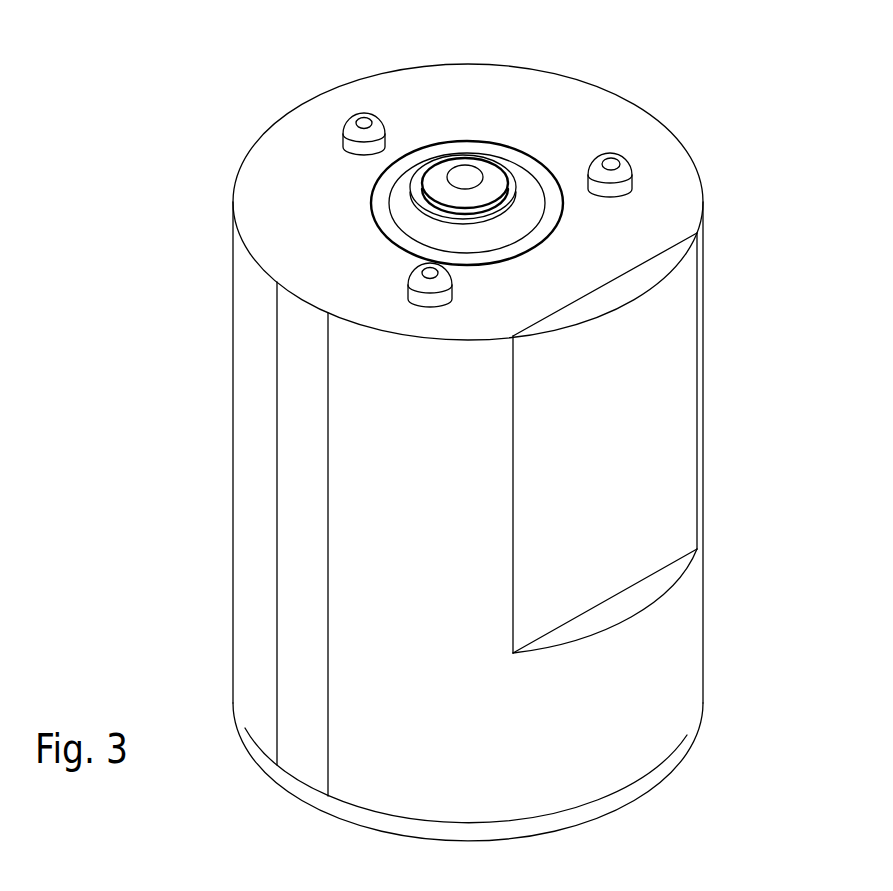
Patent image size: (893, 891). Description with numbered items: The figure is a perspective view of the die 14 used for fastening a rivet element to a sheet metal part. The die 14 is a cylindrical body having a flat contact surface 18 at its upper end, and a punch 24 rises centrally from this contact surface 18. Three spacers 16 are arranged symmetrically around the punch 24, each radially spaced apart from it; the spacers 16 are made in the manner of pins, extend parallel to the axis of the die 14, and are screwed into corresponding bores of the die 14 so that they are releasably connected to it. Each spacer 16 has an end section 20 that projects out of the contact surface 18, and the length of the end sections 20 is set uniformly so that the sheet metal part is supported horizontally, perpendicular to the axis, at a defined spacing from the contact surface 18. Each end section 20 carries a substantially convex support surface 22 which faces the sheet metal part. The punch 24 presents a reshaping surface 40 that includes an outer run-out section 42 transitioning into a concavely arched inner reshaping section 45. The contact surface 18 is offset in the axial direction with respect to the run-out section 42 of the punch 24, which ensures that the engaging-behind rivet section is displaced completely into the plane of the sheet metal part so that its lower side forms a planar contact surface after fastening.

The die 14 is at (668, 672).
The spacer 16 is at (470, 177).
The contact surface 18 is at (515, 100).
The end section 20 is at (378, 128).
The support surface 22 is at (362, 120).
The punch 24 is at (500, 173).
The reshaping surface 40 is at (522, 217).
The run-out section 42 is at (520, 242).
The inner reshaping section 45 is at (400, 202).